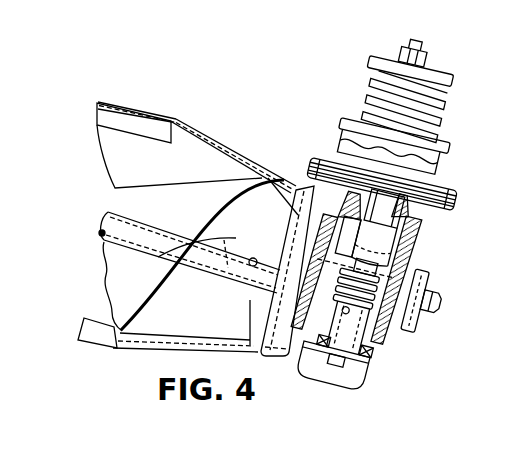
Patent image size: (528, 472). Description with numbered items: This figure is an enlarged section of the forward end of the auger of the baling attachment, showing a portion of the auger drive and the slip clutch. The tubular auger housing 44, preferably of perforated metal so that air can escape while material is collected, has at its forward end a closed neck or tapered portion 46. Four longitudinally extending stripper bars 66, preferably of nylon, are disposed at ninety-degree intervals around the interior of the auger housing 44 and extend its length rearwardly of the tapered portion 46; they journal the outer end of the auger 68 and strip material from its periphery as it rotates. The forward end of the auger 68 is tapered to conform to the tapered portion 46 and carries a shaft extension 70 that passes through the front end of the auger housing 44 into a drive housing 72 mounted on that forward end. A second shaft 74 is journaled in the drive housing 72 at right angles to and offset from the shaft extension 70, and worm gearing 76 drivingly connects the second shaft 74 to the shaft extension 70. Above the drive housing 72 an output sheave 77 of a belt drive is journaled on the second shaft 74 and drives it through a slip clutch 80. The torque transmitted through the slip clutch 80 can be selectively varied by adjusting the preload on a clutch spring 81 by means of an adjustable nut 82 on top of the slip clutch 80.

The auger housing 44 is at (133, 110).
The tapered portion 46 is at (242, 158).
The stripper bars 66 is at (93, 333).
The auger 68 is at (115, 281).
The shaft extension 70 is at (400, 268).
The drive housing 72 is at (410, 242).
The second shaft 74 is at (383, 209).
The worm gearing 76 is at (388, 332).
The output sheave 77 is at (458, 194).
The slip clutch 80 is at (440, 145).
The clutch spring 81 is at (440, 110).
The adjustable nut 82 is at (423, 62).